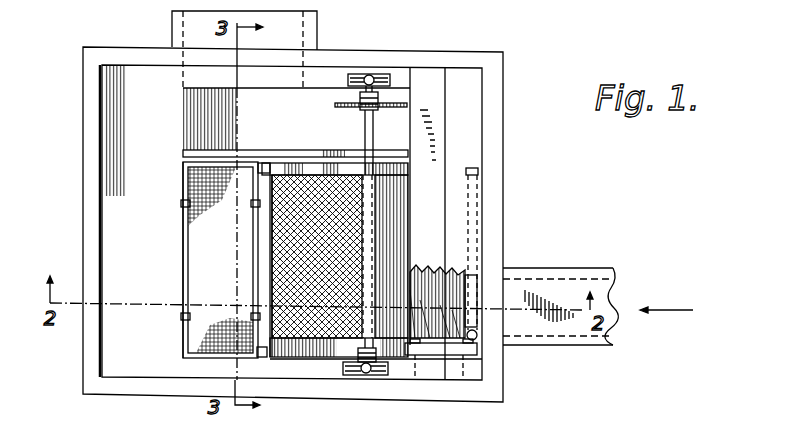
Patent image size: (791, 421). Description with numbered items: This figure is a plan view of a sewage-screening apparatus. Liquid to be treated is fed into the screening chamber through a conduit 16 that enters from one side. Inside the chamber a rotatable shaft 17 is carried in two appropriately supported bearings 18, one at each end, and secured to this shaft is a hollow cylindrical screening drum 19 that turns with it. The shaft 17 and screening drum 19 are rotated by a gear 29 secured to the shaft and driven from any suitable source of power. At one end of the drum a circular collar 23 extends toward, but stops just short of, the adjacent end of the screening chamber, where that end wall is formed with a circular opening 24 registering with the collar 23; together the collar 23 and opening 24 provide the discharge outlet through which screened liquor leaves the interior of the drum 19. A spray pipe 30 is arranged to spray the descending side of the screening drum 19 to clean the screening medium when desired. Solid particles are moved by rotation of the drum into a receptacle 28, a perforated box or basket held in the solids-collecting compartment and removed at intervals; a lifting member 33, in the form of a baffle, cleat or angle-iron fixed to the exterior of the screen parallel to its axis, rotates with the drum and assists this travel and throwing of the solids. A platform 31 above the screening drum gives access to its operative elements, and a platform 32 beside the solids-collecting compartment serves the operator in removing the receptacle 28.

The conduit 16 is at (547, 268).
The rotatable shaft 17 is at (365, 125).
The bearings 18 is at (357, 74).
The screening drum 19 is at (272, 232).
The circular collar 23 is at (380, 175).
The circular opening 24 is at (337, 150).
The receptacle 28 is at (185, 275).
The gear 29 is at (335, 105).
The spray pipe 30 is at (483, 275).
The platform 31 is at (469, 125).
The platform 32 is at (128, 165).
The lifting member 33 is at (272, 275).